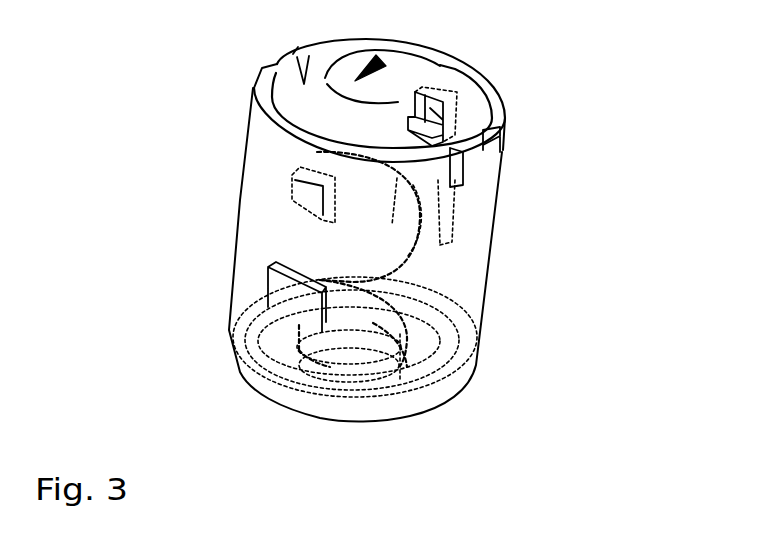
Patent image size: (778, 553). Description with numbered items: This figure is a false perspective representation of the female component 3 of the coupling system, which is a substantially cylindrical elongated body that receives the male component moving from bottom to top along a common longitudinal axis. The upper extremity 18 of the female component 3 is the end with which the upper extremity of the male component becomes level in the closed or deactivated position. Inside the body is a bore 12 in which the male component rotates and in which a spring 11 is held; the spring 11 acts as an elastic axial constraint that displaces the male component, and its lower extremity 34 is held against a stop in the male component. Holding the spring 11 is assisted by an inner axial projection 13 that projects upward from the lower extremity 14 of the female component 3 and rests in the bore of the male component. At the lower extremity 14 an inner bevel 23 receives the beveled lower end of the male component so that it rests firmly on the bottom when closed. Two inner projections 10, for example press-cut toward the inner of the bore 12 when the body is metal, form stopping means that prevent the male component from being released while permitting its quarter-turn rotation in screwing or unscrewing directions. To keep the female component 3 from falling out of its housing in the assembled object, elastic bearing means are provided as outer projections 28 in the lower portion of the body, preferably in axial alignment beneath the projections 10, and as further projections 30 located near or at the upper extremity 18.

The female component 3 is at (493, 230).
The projections 10 is at (298, 208).
The spring 11 is at (390, 57).
The bore 12 is at (295, 120).
The inner axial projection 13 is at (398, 380).
The lower extremity 14 is at (273, 362).
The upper extremity 18 is at (317, 40).
The inner bevel 23 is at (433, 330).
The outer projections 28 is at (270, 268).
The projections 30 is at (500, 155).
The lower extremity 34 is at (328, 360).